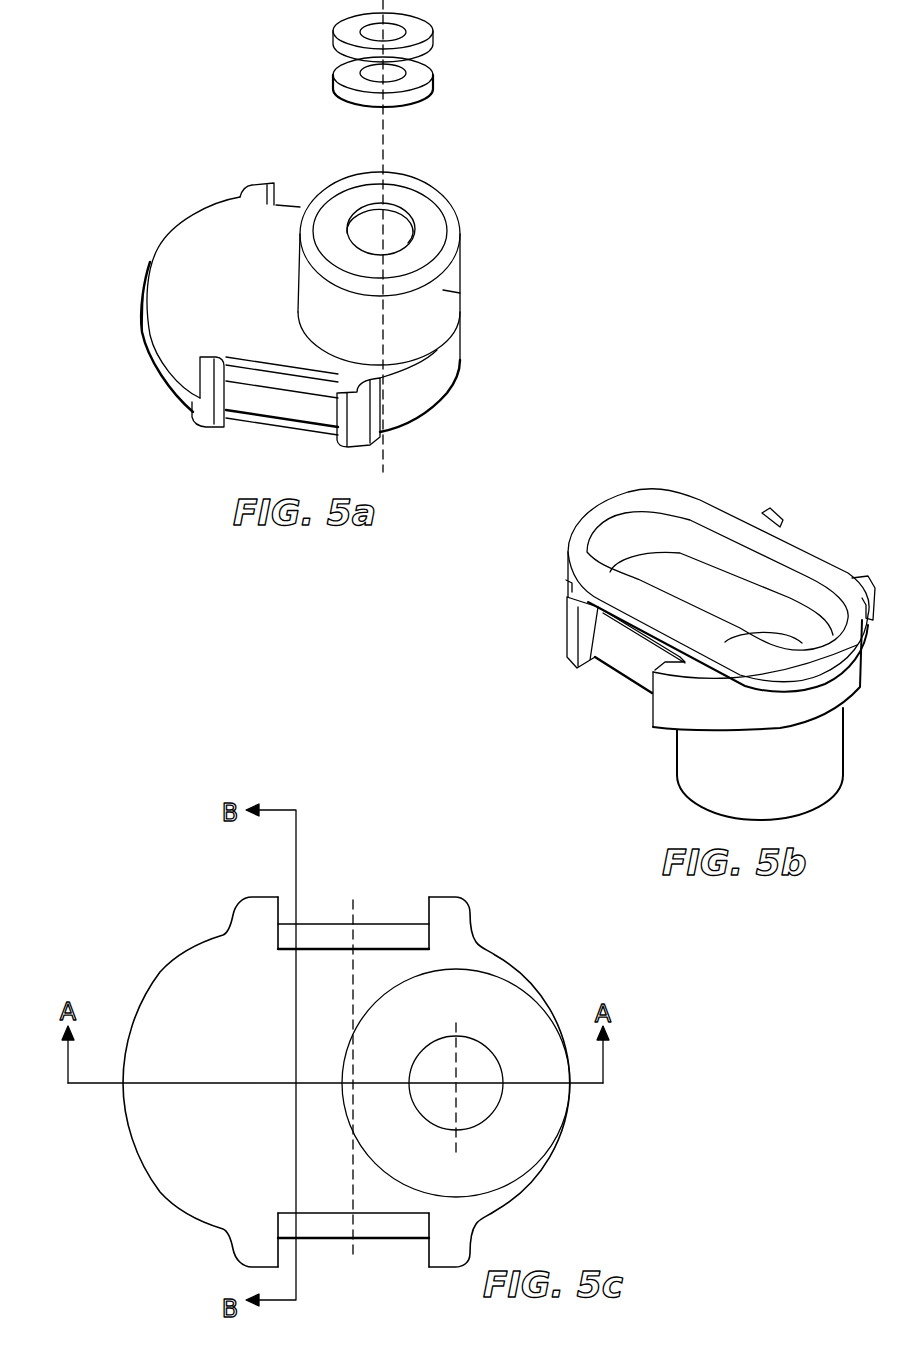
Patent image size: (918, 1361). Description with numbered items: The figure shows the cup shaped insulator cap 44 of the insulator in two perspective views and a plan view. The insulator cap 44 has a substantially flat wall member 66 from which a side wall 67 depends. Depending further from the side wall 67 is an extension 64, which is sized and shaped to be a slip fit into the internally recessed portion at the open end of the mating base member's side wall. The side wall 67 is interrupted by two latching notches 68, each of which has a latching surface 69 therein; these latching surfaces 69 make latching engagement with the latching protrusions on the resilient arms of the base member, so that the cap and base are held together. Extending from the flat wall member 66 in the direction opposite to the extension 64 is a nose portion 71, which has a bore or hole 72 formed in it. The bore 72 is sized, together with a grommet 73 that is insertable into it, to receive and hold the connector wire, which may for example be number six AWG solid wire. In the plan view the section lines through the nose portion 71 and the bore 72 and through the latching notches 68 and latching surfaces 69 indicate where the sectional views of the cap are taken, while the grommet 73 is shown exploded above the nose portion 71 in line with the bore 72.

In FIG. 5a, the insulator cap 44 is at (165, 350).
In FIG. 5b, the extension 64 is at (615, 672).
In FIG. 5a, the flat wall member 66 is at (177, 258).
In FIG. 5a, the side wall 67 is at (148, 332).
In FIG. 5b, the side wall 67 is at (567, 612).
In FIG. 5a, the latching notches 68 is at (290, 198).
In FIG. 5c, the latching notches 68 is at (400, 915).
In FIG. 5a, the latching surfaces 69 is at (300, 200).
In FIG. 5c, the latching surfaces 69 is at (333, 931).
In FIG. 5a, the nose portion 71 is at (443, 292).
In FIG. 5b, the nose portion 71 is at (680, 773).
In FIG. 5c, the nose portion 71 is at (515, 1018).
In FIG. 5a, the bore 72 is at (405, 215).
In FIG. 5c, the bore 72 is at (470, 1110).
In FIG. 5a, the grommet 73 is at (418, 33).